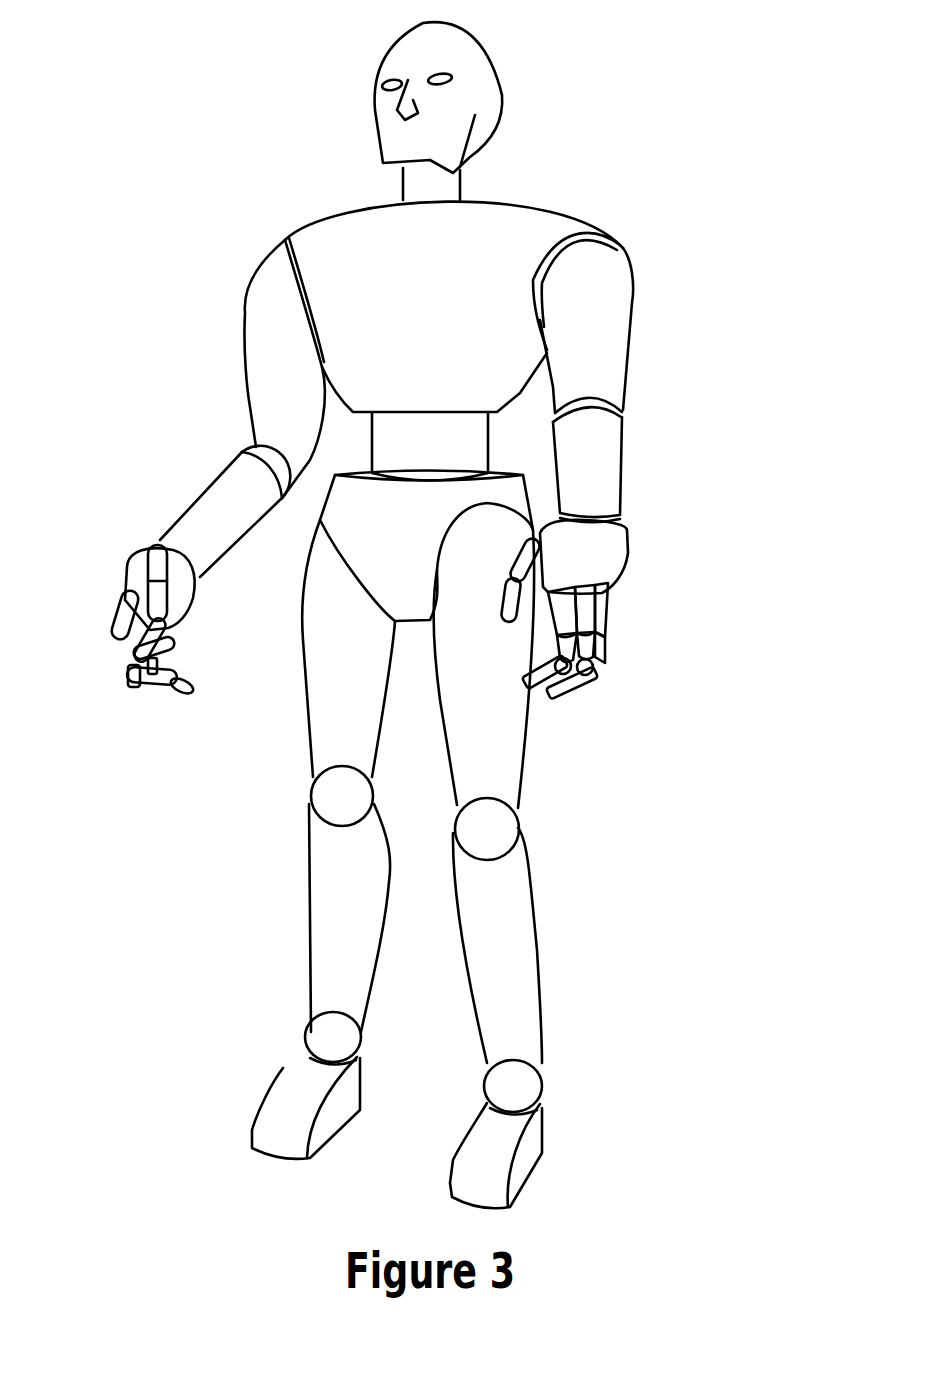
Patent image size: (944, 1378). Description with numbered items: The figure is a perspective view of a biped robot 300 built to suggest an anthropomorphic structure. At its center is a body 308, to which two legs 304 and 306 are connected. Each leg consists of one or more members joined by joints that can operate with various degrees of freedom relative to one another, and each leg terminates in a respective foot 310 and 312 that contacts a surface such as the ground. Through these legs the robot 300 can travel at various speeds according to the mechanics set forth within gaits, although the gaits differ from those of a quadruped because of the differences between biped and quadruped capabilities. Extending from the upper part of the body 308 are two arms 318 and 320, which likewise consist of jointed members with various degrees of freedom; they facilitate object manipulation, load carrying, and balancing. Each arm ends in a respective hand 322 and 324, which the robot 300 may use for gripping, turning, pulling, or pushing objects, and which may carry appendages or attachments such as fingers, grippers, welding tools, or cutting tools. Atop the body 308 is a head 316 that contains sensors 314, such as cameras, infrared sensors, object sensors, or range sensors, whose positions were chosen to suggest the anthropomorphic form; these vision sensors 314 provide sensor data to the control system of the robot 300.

The robot 300 is at (662, 133).
The leg 304 is at (552, 883).
The leg 306 is at (272, 860).
The body 308 is at (295, 509).
The foot 310 is at (545, 1134).
The foot 312 is at (280, 1072).
The sensor 314 is at (387, 80).
The head 316 is at (492, 28).
The arm 318 is at (670, 469).
The arm 320 is at (155, 492).
The hand 322 is at (627, 570).
The hand 324 is at (125, 578).